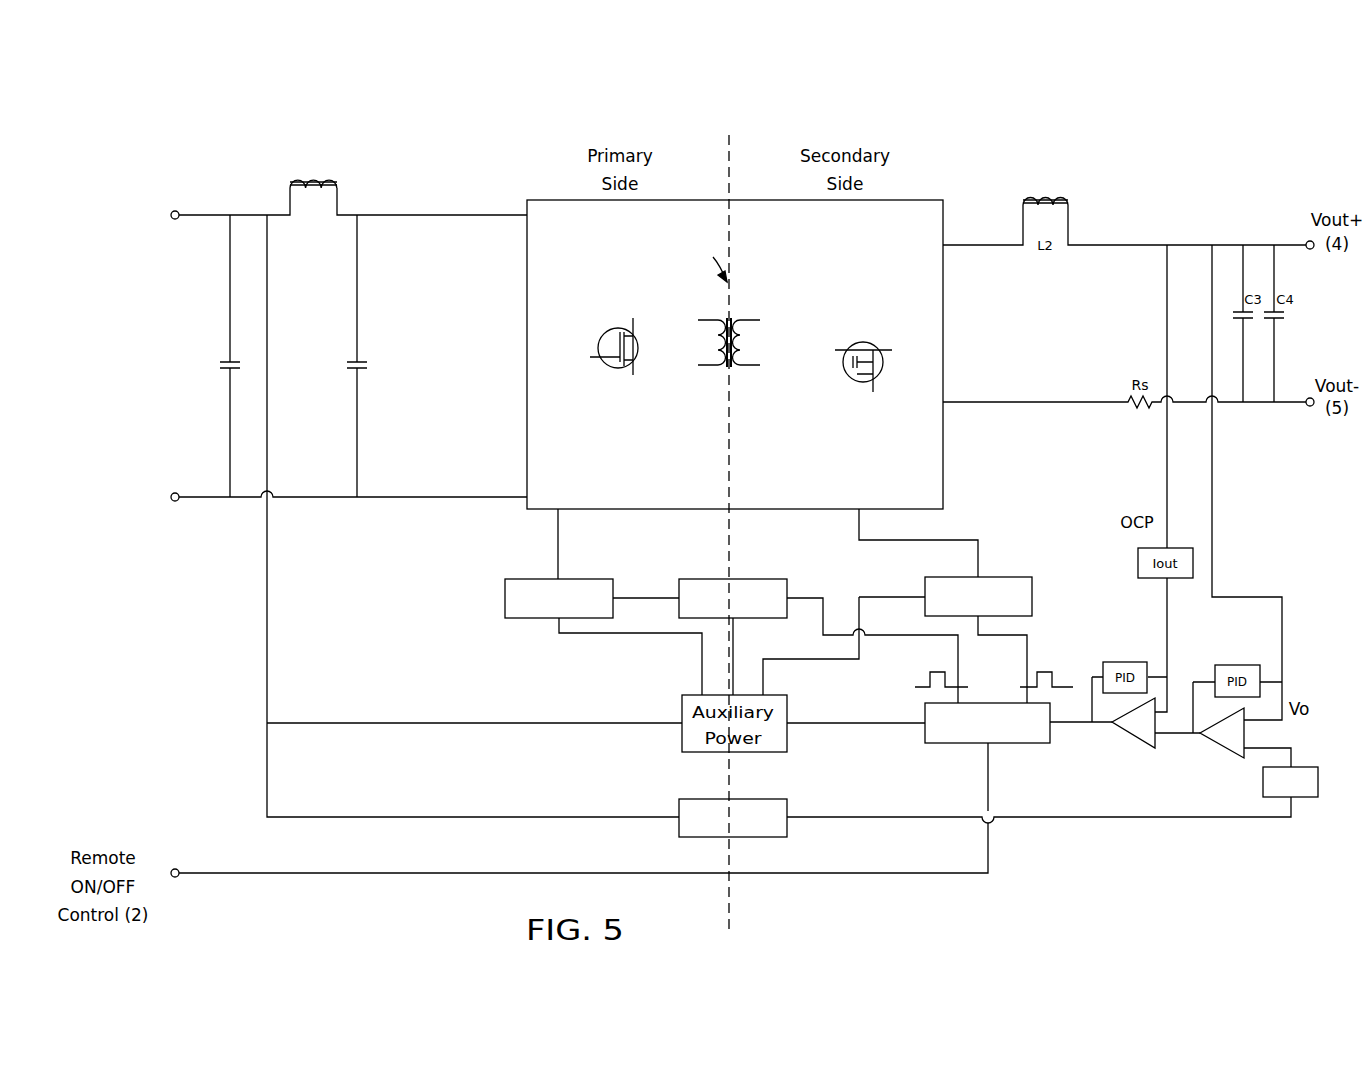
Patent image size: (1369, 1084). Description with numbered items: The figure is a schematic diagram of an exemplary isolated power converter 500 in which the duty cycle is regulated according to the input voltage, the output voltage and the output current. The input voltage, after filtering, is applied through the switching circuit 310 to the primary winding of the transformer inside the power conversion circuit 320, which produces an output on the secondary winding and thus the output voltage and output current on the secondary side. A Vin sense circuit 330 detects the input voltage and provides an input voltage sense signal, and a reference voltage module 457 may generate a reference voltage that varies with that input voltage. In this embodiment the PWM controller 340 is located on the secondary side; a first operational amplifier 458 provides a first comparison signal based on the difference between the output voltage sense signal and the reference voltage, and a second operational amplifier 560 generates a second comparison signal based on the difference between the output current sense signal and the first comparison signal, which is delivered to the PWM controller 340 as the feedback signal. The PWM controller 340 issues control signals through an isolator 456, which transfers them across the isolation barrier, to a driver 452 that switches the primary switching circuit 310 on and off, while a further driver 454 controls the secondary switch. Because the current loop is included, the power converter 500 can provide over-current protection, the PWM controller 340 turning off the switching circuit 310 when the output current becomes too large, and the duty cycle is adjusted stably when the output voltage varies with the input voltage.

The power converter 500 is at (296, 118).
The power conversion circuit 320 is at (735, 354).
The switching circuit 310 is at (607, 290).
The Vin sense circuit 330 is at (680, 802).
The PWM controller 340 is at (950, 745).
The driver 452 is at (540, 578).
The driver 454 is at (1033, 594).
The isolator 456 is at (752, 578).
The reference voltage module 457 is at (1300, 766).
The first operational amplifier 458 is at (1236, 758).
The second operational amplifier 560 is at (1138, 745).